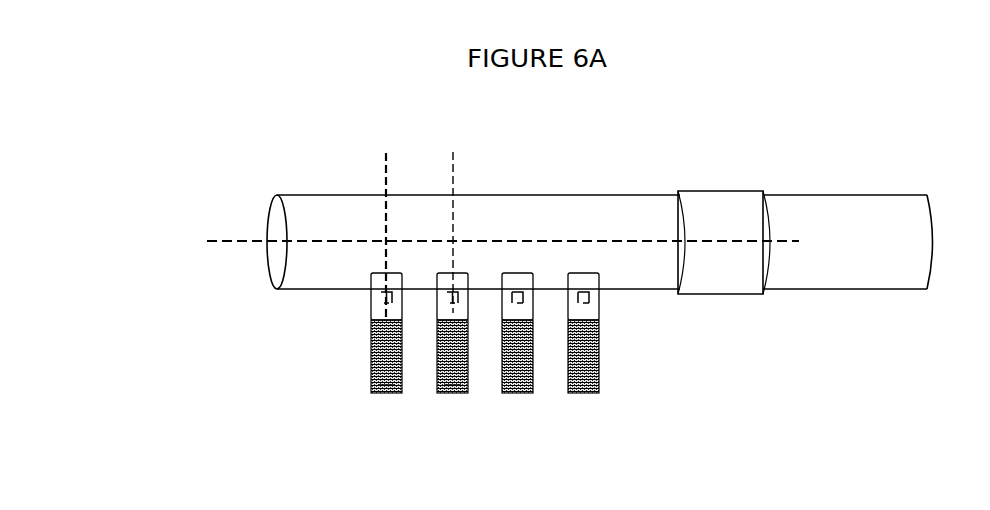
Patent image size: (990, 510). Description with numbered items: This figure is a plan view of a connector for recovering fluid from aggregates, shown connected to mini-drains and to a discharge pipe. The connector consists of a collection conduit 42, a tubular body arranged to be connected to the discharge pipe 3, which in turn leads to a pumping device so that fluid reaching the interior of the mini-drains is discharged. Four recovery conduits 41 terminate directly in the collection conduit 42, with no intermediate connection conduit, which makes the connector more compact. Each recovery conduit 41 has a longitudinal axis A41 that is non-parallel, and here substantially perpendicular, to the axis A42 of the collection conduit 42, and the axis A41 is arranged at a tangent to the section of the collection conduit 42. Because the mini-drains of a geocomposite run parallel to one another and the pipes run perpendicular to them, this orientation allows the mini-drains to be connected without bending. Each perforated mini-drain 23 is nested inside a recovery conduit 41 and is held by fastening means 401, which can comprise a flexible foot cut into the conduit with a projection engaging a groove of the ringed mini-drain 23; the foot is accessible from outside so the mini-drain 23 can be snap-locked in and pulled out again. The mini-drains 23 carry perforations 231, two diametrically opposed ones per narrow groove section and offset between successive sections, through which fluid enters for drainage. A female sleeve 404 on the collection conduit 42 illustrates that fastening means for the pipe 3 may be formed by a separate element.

The collection conduit 42 is at (304, 200).
The discharge pipe 3 is at (868, 208).
The female sleeve 404 is at (723, 197).
The axis of the collection conduit A42 is at (234, 241).
The longitudinal axis of the recovery conduit A41 is at (452, 153).
The recovery conduit 41 is at (395, 277).
The fastening means 401 is at (520, 300).
The mini-drain 23 is at (580, 393).
The perforation 231 is at (440, 383).